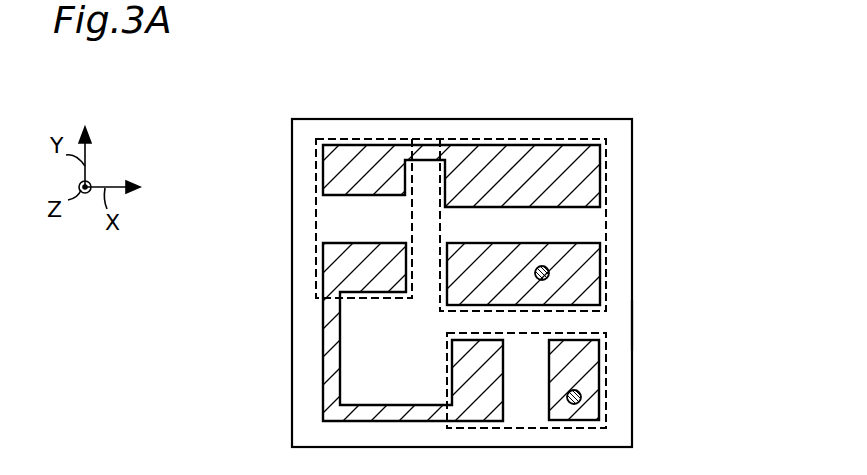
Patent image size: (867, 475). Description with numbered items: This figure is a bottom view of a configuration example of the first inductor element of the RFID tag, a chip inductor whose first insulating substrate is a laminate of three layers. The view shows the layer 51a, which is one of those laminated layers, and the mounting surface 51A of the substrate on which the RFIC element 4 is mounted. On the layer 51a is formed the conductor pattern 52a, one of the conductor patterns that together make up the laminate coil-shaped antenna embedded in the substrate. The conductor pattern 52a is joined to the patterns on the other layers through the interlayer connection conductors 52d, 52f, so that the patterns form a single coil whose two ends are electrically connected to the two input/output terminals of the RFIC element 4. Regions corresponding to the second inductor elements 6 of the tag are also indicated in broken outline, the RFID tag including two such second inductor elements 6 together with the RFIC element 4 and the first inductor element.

The radio-frequency integrated circuit (RFIC) element 4 is at (562, 139).
The second inductor element 6 is at (358, 139).
The mounting surface 51A is at (621, 177).
The layer 51a is at (621, 327).
The conductor pattern 52a is at (335, 332).
The interlayer connection conductor 52f is at (548, 270).
The interlayer connection conductor 52d is at (580, 397).